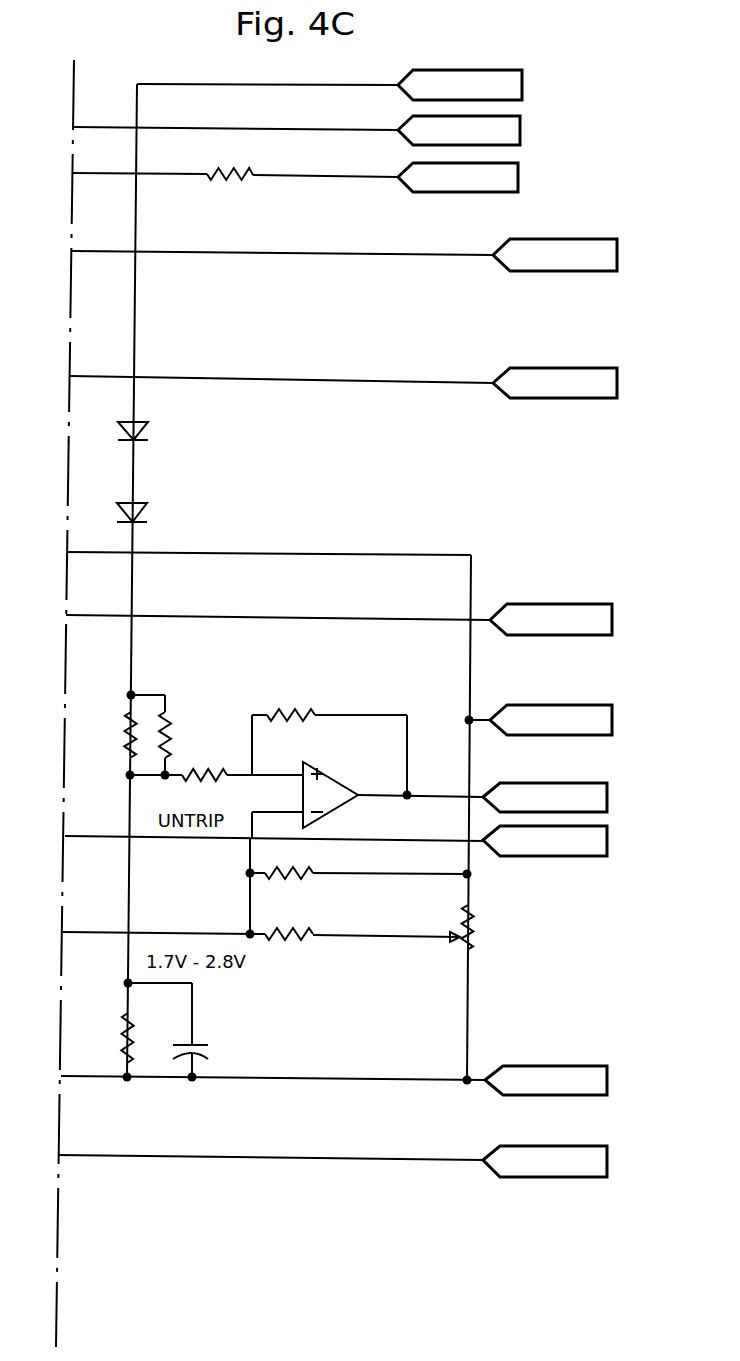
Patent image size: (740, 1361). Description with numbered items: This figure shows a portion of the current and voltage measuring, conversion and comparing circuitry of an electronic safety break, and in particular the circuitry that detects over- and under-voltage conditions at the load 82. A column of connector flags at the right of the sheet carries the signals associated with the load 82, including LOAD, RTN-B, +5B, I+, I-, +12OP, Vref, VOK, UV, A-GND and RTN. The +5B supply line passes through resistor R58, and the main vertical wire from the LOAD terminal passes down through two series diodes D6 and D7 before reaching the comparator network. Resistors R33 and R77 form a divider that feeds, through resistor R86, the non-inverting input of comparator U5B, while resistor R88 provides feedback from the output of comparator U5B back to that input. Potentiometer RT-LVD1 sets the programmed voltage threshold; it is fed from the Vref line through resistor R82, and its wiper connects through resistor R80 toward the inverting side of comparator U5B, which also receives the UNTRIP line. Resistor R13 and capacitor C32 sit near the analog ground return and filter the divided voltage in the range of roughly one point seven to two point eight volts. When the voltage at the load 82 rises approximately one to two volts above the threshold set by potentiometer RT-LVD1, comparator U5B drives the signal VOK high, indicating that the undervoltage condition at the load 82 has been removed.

The load 82 is at (507, 606).
The resistor R58 10 ohm R58 is at (230, 179).
The diode D6 1N4148 D6 is at (170, 444).
The diode D7 1N4148 D7 is at (169, 523).
The resistor R33 100K R33 is at (105, 724).
The resistor R77 909K R77 is at (192, 729).
The resistor R86 1K R86 is at (214, 776).
The resistor R88 1MEG R88 is at (290, 690).
The comparator U5B is at (364, 795).
The resistor R82 13K R82 is at (289, 875).
The resistor R80 20K R80 is at (289, 963).
The potentiometer RT-LVD1 is at (506, 932).
The resistor R13 10K R13 is at (106, 1036).
The capacitor C32 100nF C32 is at (222, 1048).